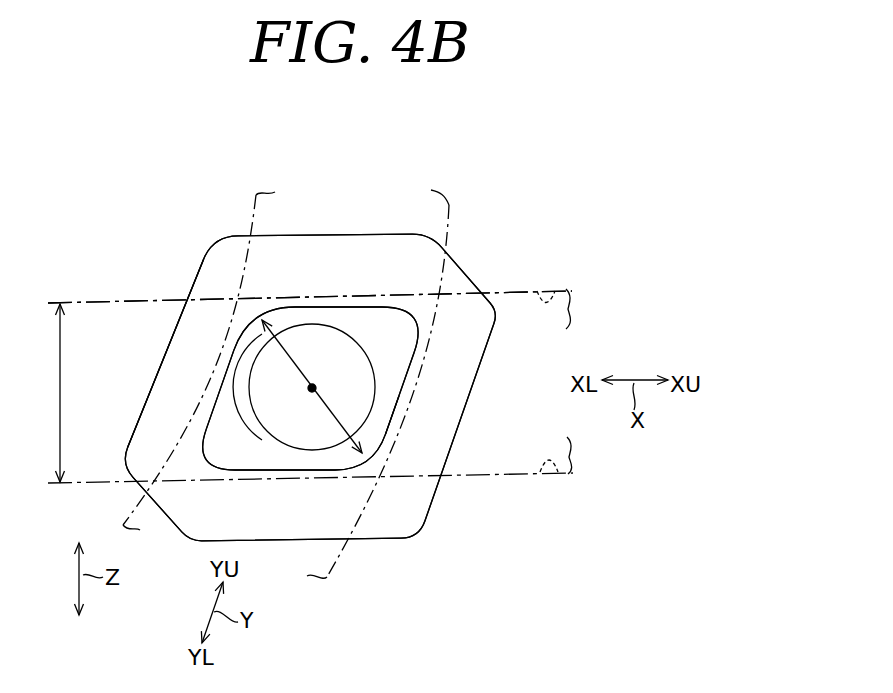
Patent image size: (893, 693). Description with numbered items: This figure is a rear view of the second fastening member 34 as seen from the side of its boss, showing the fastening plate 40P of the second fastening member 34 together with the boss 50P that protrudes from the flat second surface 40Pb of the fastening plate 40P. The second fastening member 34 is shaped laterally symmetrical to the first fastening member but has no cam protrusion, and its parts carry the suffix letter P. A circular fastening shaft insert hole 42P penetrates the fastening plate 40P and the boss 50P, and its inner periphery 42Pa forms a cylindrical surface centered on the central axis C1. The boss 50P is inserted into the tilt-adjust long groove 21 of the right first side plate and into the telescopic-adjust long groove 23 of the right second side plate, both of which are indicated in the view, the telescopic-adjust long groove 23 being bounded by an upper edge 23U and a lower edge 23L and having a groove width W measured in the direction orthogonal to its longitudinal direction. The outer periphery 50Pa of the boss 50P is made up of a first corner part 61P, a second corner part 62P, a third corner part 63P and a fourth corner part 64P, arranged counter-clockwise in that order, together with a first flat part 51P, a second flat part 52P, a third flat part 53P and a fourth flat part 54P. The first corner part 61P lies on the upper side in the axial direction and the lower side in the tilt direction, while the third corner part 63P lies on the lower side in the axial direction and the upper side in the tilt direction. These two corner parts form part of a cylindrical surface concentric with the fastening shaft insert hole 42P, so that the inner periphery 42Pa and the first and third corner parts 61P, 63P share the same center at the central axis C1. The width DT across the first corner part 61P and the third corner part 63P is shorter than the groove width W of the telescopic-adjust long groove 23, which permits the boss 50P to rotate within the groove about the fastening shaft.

The fastening plate 40P is at (320, 233).
The second fastening member 34 is at (350, 203).
The tilt-adjust long groove 21 is at (434, 193).
The telescopic-adjust long groove 23 is at (106, 315).
The upper edge of telescopic-adjust long groove 23U is at (553, 291).
The lower edge of telescopic-adjust long groove 23L is at (548, 474).
The second surface 40Pb is at (198, 282).
The groove width W is at (58, 392).
The boss 50P is at (402, 388).
The outer periphery of boss 50Pa is at (390, 418).
The first flat part 51P is at (313, 472).
The second flat part 52P is at (410, 362).
The third flat part 53P is at (327, 306).
The fourth flat part 54P is at (248, 398).
The first corner part 61P is at (360, 470).
The second corner part 62P is at (415, 322).
The third corner part 63P is at (264, 314).
The fourth corner part 64P is at (208, 460).
The fastening shaft insert hole 42P is at (334, 348).
The inner periphery of fastening shaft insert hole 42Pa is at (250, 398).
The width across first and third corner parts DT is at (312, 386).
The central axis C1 is at (312, 392).